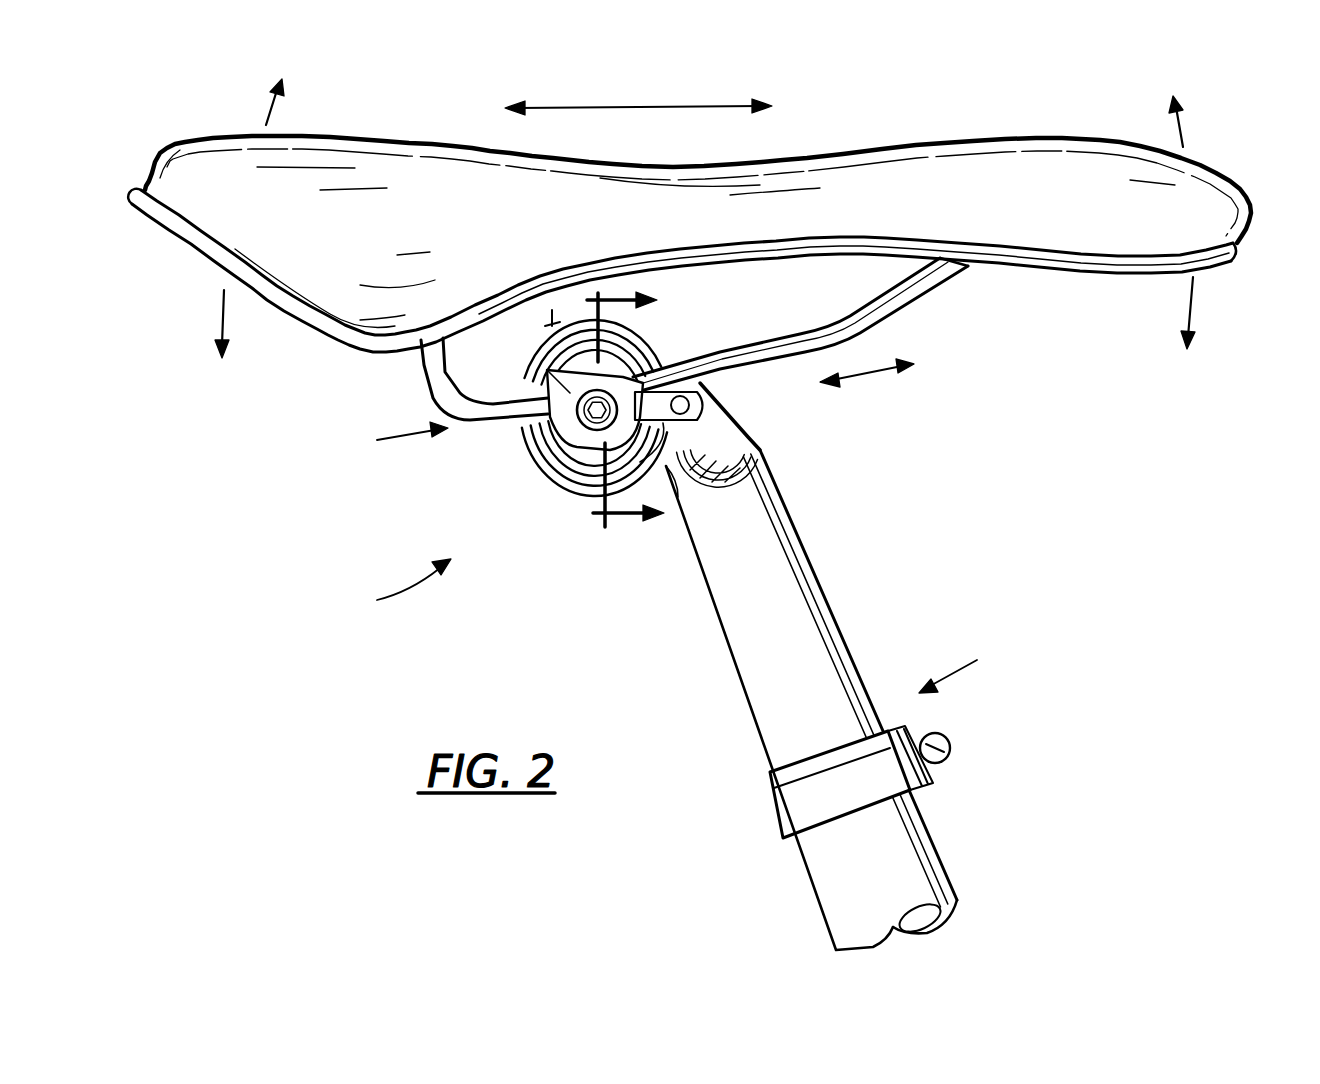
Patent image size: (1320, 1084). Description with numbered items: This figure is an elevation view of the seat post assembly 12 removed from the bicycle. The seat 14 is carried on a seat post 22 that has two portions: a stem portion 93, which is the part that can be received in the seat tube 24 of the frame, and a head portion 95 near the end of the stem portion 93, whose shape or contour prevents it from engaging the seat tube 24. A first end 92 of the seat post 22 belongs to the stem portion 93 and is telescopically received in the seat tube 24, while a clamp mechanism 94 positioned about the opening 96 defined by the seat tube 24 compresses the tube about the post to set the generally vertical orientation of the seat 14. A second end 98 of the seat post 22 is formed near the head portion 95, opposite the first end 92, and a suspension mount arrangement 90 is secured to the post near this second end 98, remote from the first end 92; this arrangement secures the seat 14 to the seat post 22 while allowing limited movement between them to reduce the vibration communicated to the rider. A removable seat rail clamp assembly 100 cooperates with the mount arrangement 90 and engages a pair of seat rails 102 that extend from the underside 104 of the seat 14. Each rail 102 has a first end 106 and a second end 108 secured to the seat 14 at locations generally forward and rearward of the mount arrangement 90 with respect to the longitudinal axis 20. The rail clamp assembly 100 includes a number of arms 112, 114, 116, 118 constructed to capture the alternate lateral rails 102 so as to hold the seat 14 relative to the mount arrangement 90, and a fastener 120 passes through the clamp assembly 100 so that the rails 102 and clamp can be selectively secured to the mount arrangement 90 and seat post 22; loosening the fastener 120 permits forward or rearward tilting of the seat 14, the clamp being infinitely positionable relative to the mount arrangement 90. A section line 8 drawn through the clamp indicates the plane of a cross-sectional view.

The section line 8- 8 is at (638, 415).
The seat post assembly 12 is at (390, 591).
The seat 14 is at (1018, 93).
The longitudinal axis 20 is at (677, 107).
The seat post 22 is at (780, 605).
The seat tube 24 is at (833, 897).
The suspension mount arrangement 90 is at (510, 470).
The first end 92 is at (948, 664).
The stem portion 93 is at (800, 533).
The clamp mechanism 94 is at (950, 737).
The head portion 95 is at (740, 407).
The opening 96 is at (757, 763).
The second end 98 is at (387, 441).
The seat rail clamp assembly 100 is at (557, 480).
The seat rails 102 is at (808, 337).
The underside 104 is at (1097, 272).
The first end 106 is at (423, 360).
The second end 108 is at (970, 273).
The arm 112 is at (560, 306).
The arm 114 is at (633, 350).
The arm 116 is at (603, 440).
The arm 118 is at (527, 440).
The fastener 120 is at (547, 380).